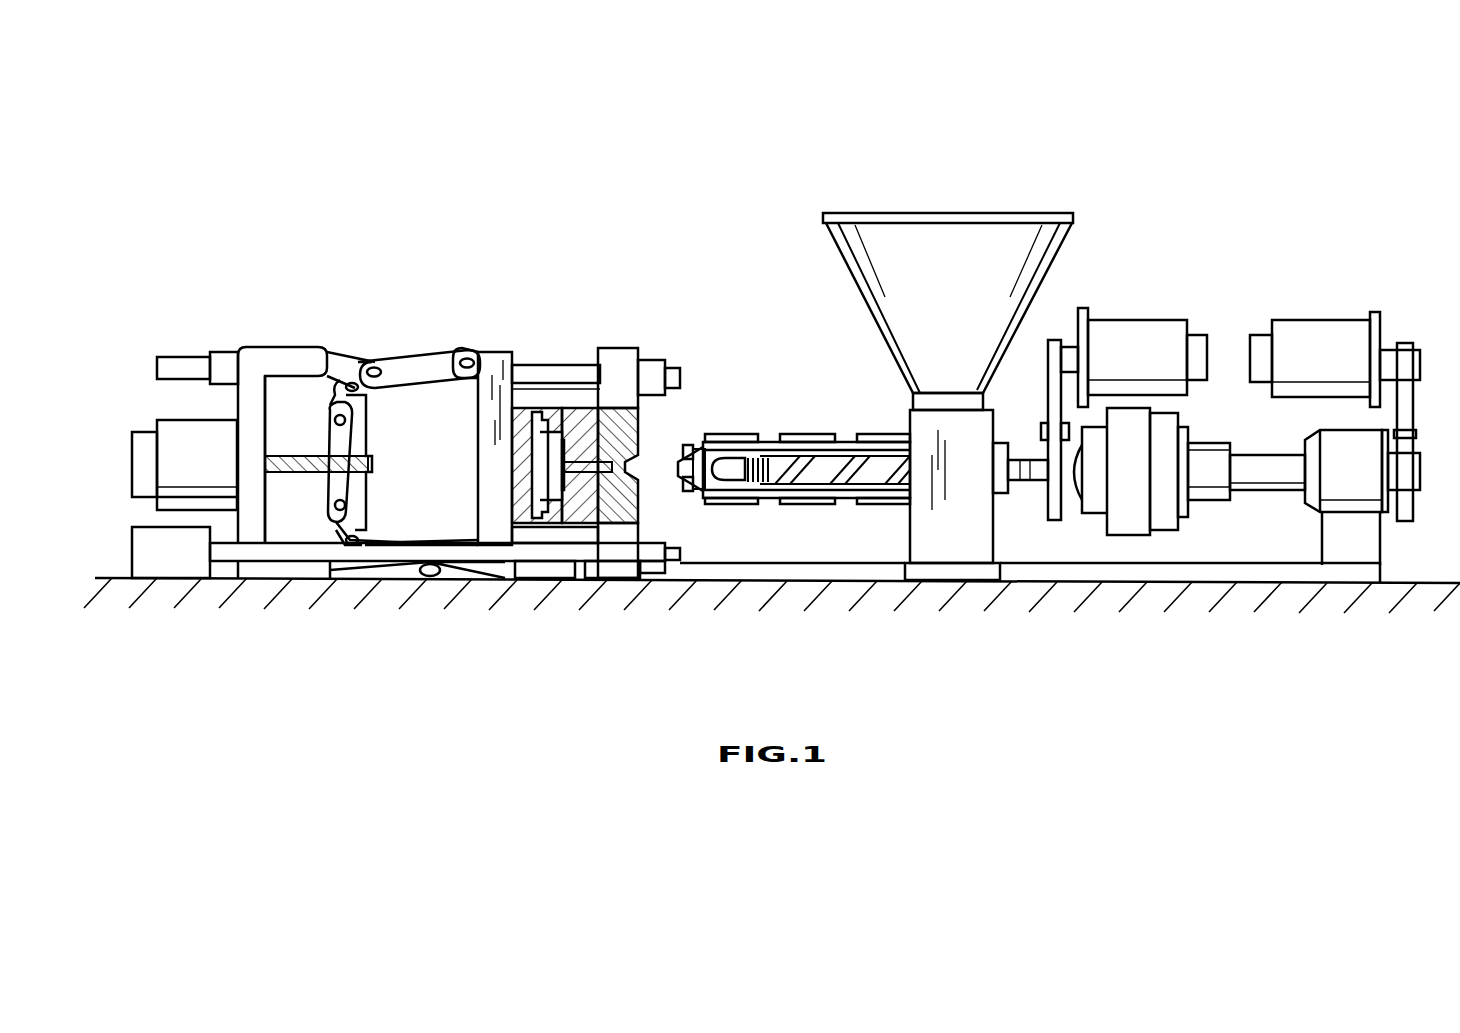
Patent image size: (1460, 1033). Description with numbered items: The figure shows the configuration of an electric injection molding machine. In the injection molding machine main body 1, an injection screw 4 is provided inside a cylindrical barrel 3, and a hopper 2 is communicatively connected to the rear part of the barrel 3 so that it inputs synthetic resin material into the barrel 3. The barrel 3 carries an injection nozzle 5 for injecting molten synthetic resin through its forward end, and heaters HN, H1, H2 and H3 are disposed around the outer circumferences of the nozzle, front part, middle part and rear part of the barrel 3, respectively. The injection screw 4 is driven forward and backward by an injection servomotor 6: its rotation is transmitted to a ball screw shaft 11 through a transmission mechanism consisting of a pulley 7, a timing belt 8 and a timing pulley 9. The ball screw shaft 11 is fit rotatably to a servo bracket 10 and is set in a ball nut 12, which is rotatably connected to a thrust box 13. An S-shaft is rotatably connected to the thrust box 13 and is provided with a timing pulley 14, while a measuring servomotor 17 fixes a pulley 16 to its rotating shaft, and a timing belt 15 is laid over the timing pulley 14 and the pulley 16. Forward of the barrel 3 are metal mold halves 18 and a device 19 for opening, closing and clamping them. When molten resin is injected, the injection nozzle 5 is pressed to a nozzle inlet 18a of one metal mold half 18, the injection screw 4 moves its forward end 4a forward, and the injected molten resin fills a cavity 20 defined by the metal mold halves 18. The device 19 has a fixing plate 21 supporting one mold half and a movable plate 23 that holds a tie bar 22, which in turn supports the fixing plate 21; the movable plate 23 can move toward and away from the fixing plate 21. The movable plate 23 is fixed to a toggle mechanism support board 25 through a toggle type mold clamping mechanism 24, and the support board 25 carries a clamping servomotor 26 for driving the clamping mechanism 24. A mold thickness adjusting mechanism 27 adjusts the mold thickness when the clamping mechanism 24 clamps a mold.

The injection molding machine main body 1 is at (776, 352).
The hopper 2 is at (948, 210).
The barrel 3 is at (840, 442).
The injection screw 4 is at (848, 476).
The forward end 4a is at (728, 460).
The injection nozzle 5 is at (690, 493).
The injection servomotor 6 is at (1318, 320).
The pulley 7 is at (1420, 360).
The timing belt 8 is at (1414, 406).
The timing pulley 9 is at (1420, 470).
The servo bracket 10 is at (1360, 520).
The ball screw shaft 11 is at (1275, 488).
The ball nut 12 is at (1215, 440).
The thrust box 13 is at (1135, 533).
The timing pulley 14 is at (1027, 483).
The timing belt 15 is at (1046, 398).
The pulley 16 is at (1078, 332).
The measuring servomotor 17 is at (1133, 320).
The metal mold halves 18 is at (520, 548).
The nozzle inlet 18a is at (615, 466).
The device for opening/closing and clamping the metal mold halves 19 is at (566, 342).
The cavity 20 is at (550, 530).
The fixing plate 21 is at (624, 350).
The tie bar 22 is at (530, 364).
The movable plate 23 is at (488, 350).
The toggle type mold clamping mechanism 24 is at (372, 360).
The toggle mechanism support board 25 is at (270, 352).
The clamping servomotor 26 is at (160, 418).
The mold thickness adjusting mechanism 27 is at (176, 575).
The heater H1 is at (748, 433).
The heater H2 is at (802, 433).
The heater H3 is at (878, 433).
The heater HN is at (703, 445).